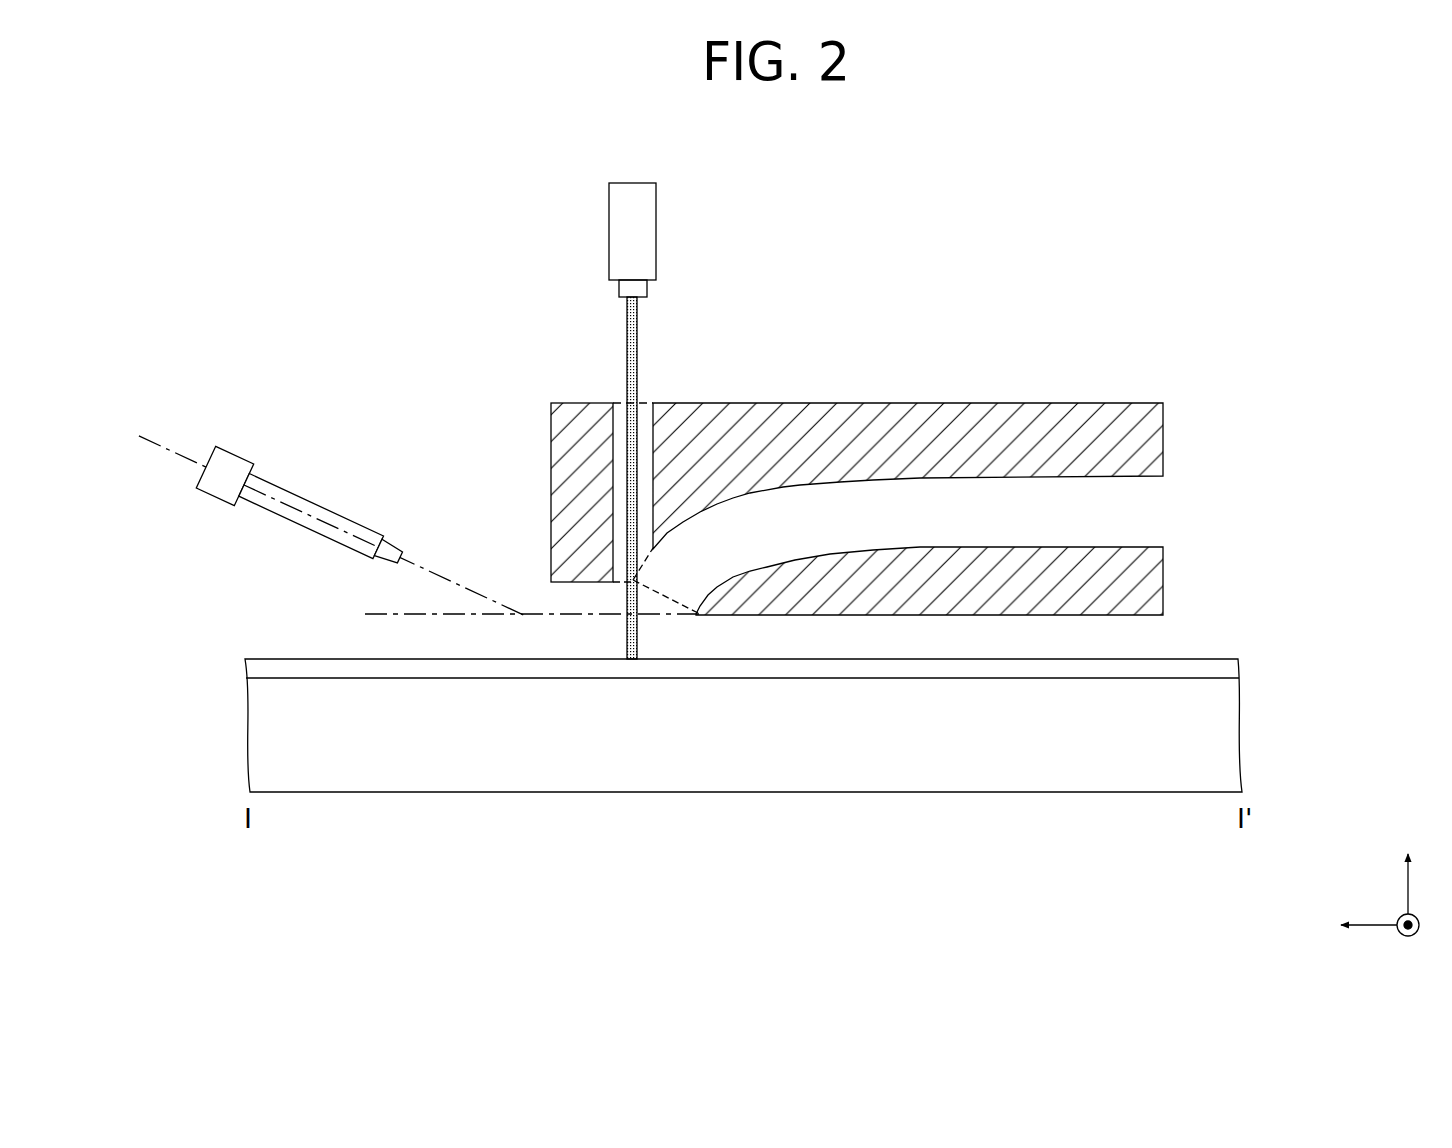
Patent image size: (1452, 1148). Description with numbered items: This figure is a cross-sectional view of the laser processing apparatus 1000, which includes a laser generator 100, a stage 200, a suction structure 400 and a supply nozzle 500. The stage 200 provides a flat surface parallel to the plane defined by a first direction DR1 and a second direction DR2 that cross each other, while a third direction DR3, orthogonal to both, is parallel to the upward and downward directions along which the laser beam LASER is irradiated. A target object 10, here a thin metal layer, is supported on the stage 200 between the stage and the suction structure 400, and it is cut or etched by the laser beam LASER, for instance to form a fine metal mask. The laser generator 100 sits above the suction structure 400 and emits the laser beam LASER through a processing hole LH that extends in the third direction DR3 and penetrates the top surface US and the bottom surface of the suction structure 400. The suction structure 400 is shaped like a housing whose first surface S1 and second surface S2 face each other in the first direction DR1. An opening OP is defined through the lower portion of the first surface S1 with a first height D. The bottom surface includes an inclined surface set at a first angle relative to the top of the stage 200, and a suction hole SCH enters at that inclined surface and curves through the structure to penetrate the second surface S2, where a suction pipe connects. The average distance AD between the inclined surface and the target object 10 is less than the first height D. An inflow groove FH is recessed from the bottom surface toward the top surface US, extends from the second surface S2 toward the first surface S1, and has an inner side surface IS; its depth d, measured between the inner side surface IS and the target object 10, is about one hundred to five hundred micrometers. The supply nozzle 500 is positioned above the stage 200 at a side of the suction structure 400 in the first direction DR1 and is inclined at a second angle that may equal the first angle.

The laser processing apparatus 1000 is at (1157, 192).
The laser generator 100 is at (622, 232).
The laser beam LASER is at (624, 350).
The supply nozzle 500 is at (228, 462).
The suction structure 400 is at (1010, 415).
The first surface S1 is at (551, 470).
The second surface S2 is at (1163, 437).
The suction hole SCH is at (915, 475).
The top surface US is at (1092, 403).
The processing hole LH is at (646, 413).
The opening OP is at (558, 597).
The inflow groove FH is at (1137, 638).
The inner side surface IS is at (907, 615).
The target object 10 is at (1228, 668).
The stage 200 is at (1228, 728).
The first height D is at (581, 583).
The average distance AD is at (664, 615).
The depth d is at (495, 615).
The first direction DR1 is at (1347, 925).
The second direction DR2 is at (1408, 940).
The third direction DR3 is at (1408, 867).